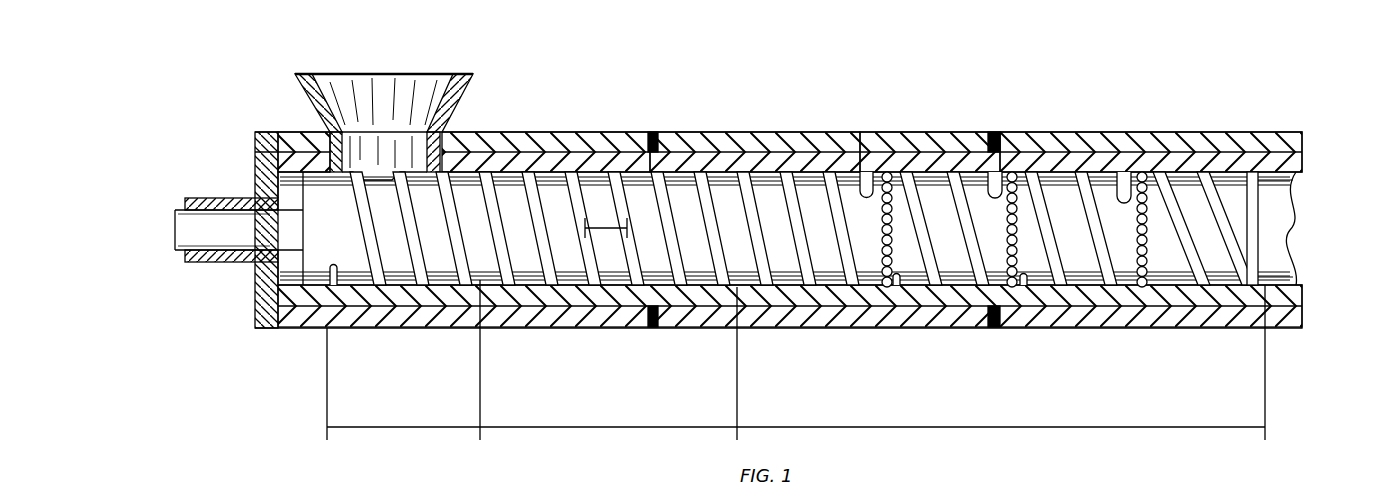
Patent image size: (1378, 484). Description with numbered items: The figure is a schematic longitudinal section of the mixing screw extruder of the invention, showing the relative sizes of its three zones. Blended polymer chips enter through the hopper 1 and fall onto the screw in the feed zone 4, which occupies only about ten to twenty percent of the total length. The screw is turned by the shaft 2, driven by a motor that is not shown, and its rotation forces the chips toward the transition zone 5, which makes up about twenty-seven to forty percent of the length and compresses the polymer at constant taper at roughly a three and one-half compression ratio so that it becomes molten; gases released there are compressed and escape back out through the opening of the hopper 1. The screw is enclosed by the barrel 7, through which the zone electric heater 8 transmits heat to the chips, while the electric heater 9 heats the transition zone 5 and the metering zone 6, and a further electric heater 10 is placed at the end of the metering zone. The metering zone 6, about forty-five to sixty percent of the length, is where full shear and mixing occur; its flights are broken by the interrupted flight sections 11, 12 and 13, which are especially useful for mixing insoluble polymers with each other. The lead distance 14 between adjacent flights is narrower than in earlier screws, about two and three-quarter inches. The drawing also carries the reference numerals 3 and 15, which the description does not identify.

The hopper 1 is at (385, 95).
The shaft 2 is at (215, 232).
The barrel 3 is at (255, 140).
The feed zone 4 is at (403, 360).
The transition zone 5 is at (608, 363).
The metering zone 6 is at (1001, 362).
The barrel 7 is at (477, 145).
The zone electric heater 8 is at (540, 145).
The electric heater 9 is at (860, 140).
The electric heater 10 is at (1107, 140).
The interrupted flight section 11 is at (895, 200).
The interrupted flight section 12 is at (1022, 208).
The interrupted flight section 13 is at (1150, 210).
The lead distance 14 is at (597, 223).
The screw discharge end 15 is at (1262, 210).